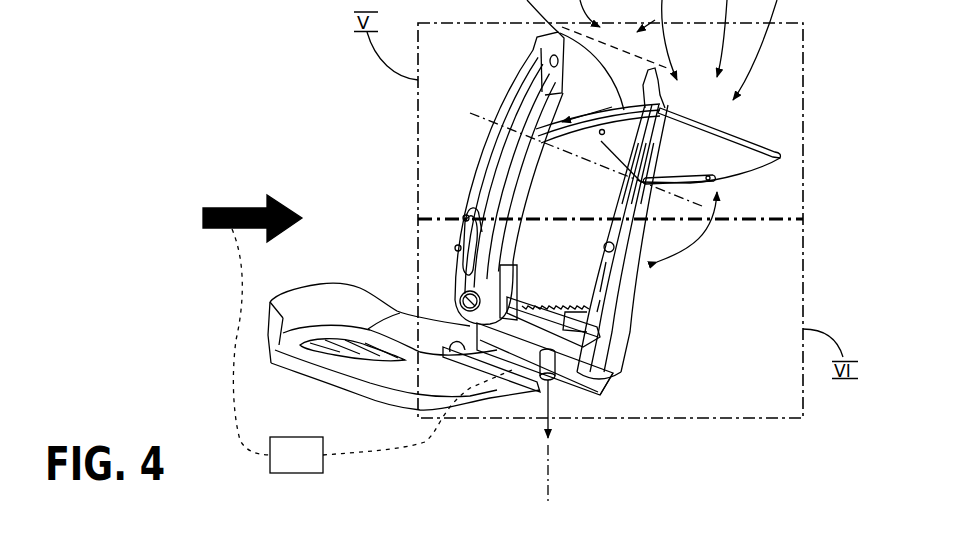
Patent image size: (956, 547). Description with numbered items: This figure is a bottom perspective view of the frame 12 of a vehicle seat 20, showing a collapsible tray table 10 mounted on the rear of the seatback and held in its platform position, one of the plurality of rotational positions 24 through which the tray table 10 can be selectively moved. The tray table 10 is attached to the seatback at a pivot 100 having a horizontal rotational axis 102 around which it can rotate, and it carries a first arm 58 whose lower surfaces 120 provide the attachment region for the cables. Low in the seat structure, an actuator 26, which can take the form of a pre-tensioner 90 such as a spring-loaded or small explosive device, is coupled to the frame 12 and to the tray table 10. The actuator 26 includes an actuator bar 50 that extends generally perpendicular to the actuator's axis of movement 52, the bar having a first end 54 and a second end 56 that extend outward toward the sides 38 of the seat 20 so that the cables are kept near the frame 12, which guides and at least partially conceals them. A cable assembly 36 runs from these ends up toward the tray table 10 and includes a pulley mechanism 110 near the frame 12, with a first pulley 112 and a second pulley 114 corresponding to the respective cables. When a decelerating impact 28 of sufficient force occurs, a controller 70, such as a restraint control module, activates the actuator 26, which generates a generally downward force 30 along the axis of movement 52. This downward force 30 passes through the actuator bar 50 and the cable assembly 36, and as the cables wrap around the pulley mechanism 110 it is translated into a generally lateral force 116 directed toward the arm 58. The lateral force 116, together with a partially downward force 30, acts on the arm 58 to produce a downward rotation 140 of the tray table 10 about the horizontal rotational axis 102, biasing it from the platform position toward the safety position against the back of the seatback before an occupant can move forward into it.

The collapsible tray table 10 is at (827, 107).
The frame 12 is at (472, 153).
The seat 20 is at (460, 93).
The rotational positions 24 is at (808, 65).
The actuator 26 is at (577, 383).
The decelerating impact 28 is at (248, 207).
The downward force 30 is at (540, 406).
The cable assembly 36 is at (593, 238).
The sides 38 is at (478, 248).
The actuator bar 50 is at (620, 345).
The axis of movement 52 is at (547, 475).
The first end 54 is at (622, 381).
The second end 56 is at (447, 318).
The first arm 58 is at (783, 157).
The controller 70 is at (307, 437).
The pre-tensioner 90 is at (582, 365).
The pivot 100 is at (503, 129).
The horizontal rotational axis 102 is at (626, 188).
The pulley mechanism 110 is at (629, 250).
The first pulley 112 is at (600, 263).
The second pulley 114 is at (488, 202).
The lateral force 116 is at (580, 113).
The lower surfaces 120 is at (748, 168).
The downward rotation 140 is at (697, 237).